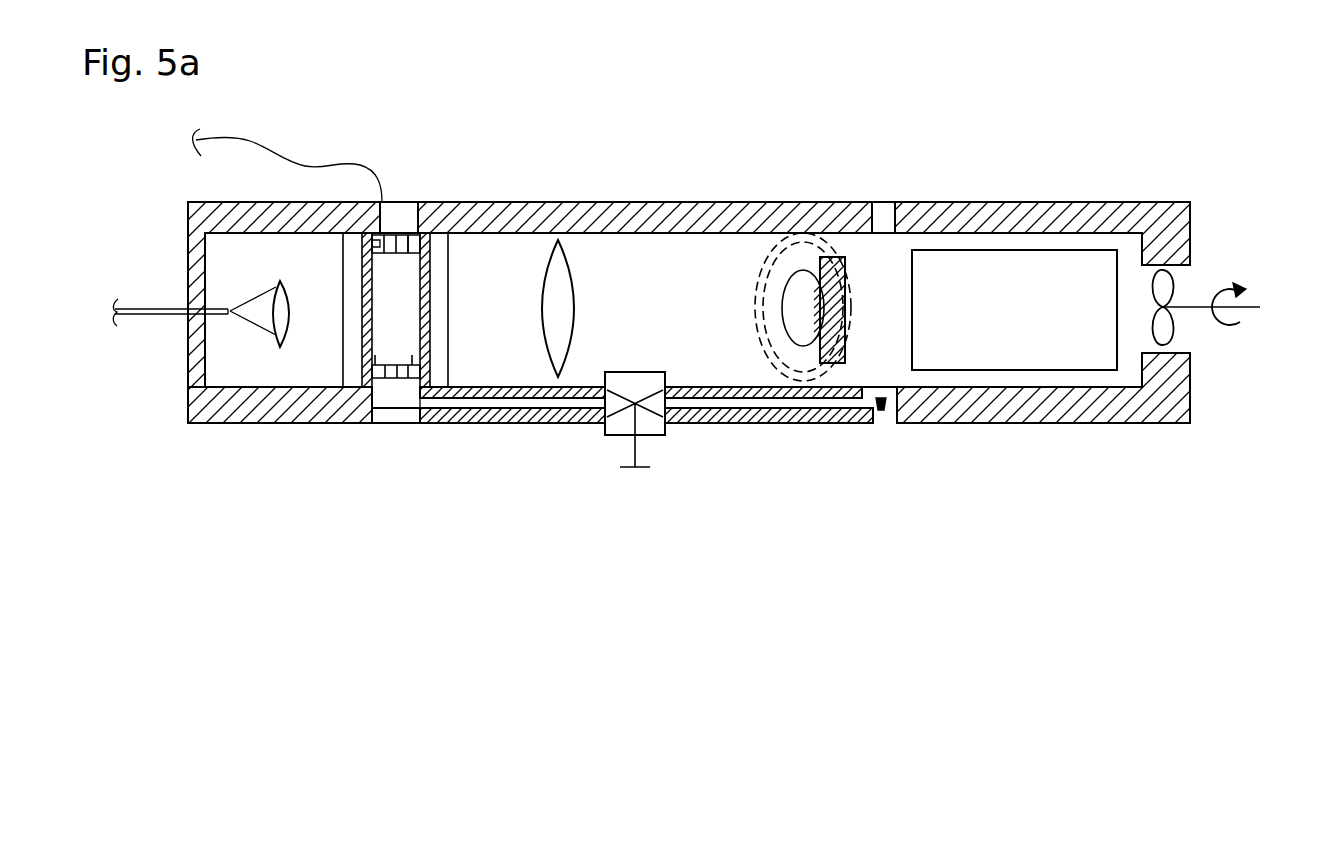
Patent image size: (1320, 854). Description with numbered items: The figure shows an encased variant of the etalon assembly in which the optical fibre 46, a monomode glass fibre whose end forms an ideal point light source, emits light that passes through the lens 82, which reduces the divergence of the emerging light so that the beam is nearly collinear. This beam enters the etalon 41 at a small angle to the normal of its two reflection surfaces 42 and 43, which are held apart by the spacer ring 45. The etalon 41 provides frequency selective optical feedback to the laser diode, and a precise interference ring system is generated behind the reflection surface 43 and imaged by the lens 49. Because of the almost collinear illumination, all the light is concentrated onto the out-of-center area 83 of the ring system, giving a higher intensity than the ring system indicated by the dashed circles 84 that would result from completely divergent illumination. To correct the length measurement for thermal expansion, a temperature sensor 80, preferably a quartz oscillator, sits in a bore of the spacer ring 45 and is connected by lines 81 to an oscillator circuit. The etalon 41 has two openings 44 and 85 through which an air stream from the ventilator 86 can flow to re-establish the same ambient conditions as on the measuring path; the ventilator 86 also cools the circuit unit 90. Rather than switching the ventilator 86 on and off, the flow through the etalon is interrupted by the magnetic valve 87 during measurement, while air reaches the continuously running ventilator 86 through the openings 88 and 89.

The etalon 41 is at (446, 234).
The reflection surface 42 is at (373, 378).
The reflection surface 43 is at (413, 378).
The opening 44 is at (393, 245).
The spacer ring 45 is at (418, 237).
The optical fibre 46 is at (140, 313).
The lens 49 is at (560, 280).
The temperature sensor 80 is at (373, 243).
The line 81 is at (247, 140).
The lens 82 is at (280, 340).
The out-of-center area 83 is at (835, 325).
The dashed circles 84 is at (852, 226).
The opening 85 is at (397, 380).
The ventilator 86 is at (1172, 280).
The magnetic valve 87 is at (617, 420).
The opening 88 is at (885, 207).
The opening 89 is at (883, 403).
The circuit unit 90 is at (1025, 272).